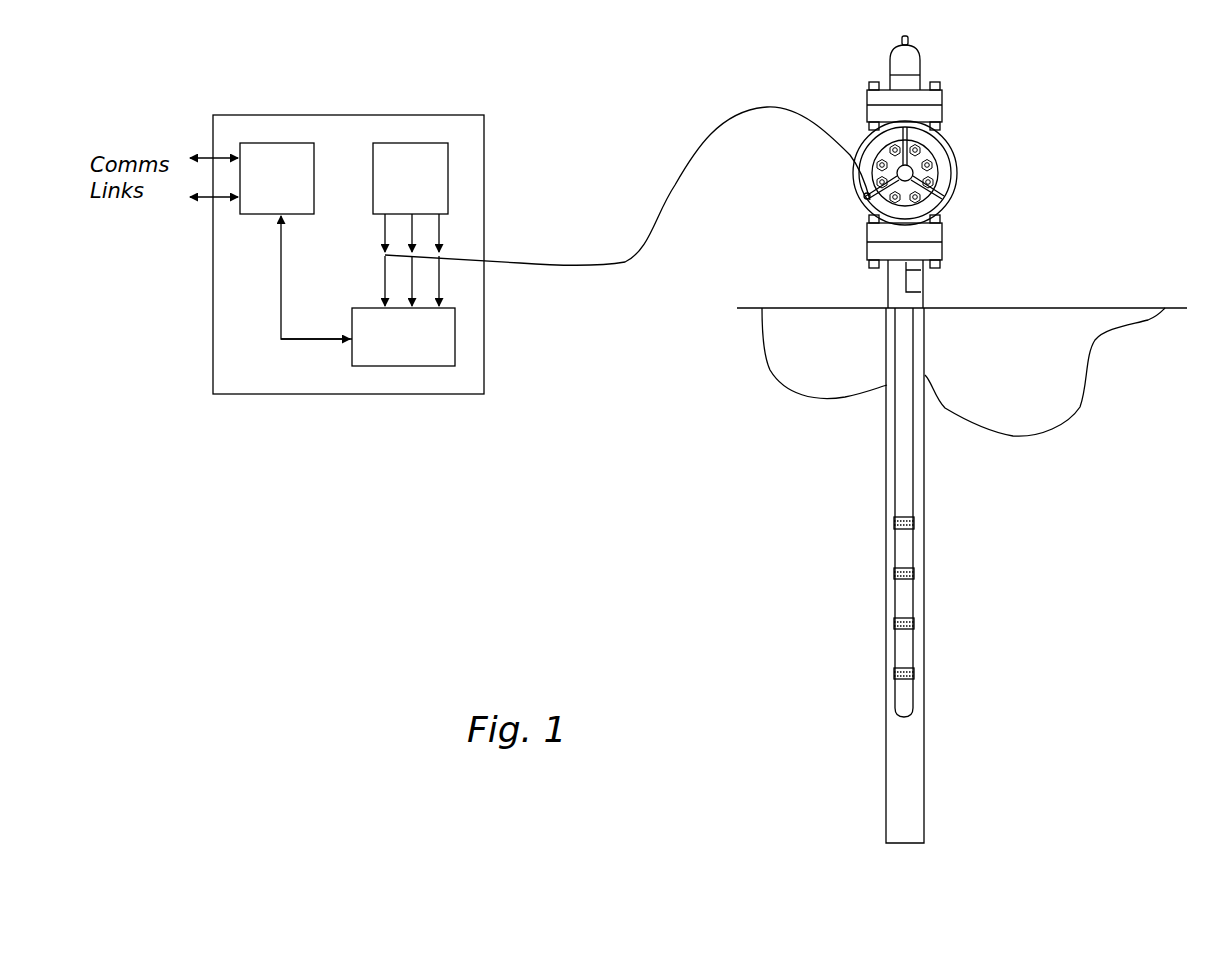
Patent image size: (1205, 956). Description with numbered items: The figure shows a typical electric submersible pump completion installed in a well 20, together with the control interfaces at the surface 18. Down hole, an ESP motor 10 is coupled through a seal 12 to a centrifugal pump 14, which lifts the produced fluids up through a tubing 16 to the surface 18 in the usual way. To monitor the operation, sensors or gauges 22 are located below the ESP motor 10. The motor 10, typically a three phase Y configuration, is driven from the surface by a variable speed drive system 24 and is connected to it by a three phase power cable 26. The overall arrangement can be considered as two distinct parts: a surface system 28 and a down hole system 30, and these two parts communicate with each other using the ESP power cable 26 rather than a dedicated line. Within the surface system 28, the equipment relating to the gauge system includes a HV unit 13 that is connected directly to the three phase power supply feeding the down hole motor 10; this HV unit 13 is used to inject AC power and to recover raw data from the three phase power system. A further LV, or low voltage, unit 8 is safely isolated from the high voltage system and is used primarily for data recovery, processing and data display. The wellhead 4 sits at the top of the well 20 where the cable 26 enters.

The wellhead 4 is at (866, 206).
The LV unit 8 is at (287, 143).
The ESP motor 10 is at (913, 653).
The seal 12 is at (913, 605).
The HV unit 13 is at (410, 366).
The centrifugal pump 14 is at (913, 553).
The tubing 16 is at (915, 407).
The surface 18 is at (1041, 304).
The well 20 is at (885, 490).
The sensors or gauges 22 is at (917, 701).
The variable speed drive system 24 is at (394, 140).
The three phase power cable 26 is at (687, 167).
The surface system 28 is at (276, 407).
The down hole system 30 is at (1096, 566).